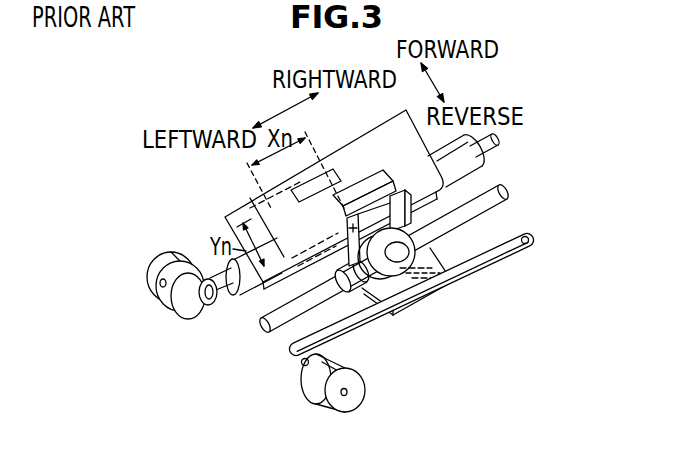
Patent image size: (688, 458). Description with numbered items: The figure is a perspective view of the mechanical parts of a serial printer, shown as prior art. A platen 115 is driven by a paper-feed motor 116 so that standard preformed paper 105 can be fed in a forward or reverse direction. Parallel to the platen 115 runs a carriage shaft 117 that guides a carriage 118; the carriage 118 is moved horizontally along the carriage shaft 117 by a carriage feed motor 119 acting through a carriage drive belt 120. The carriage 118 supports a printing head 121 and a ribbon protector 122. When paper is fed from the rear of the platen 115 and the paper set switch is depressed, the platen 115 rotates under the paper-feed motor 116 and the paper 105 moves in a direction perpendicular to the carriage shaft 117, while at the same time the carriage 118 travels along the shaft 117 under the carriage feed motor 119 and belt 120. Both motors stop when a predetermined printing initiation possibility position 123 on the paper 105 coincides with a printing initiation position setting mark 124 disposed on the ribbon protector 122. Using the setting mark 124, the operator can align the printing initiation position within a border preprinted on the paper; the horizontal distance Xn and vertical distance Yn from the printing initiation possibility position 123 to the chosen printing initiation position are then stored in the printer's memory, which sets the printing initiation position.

The standard preformed paper 105 is at (357, 140).
The platen 115 is at (483, 166).
The paper-feed motor 116 is at (162, 294).
The carriage shaft 117 is at (509, 196).
The carriage 118 is at (433, 293).
The carriage feed motor 119 is at (303, 385).
The carriage drive belt 120 is at (528, 249).
The printing head 121 is at (399, 277).
The ribbon protector 122 is at (454, 236).
The printing initiation possibility position 123 is at (271, 205).
The printing initiation position setting mark 124 is at (350, 229).